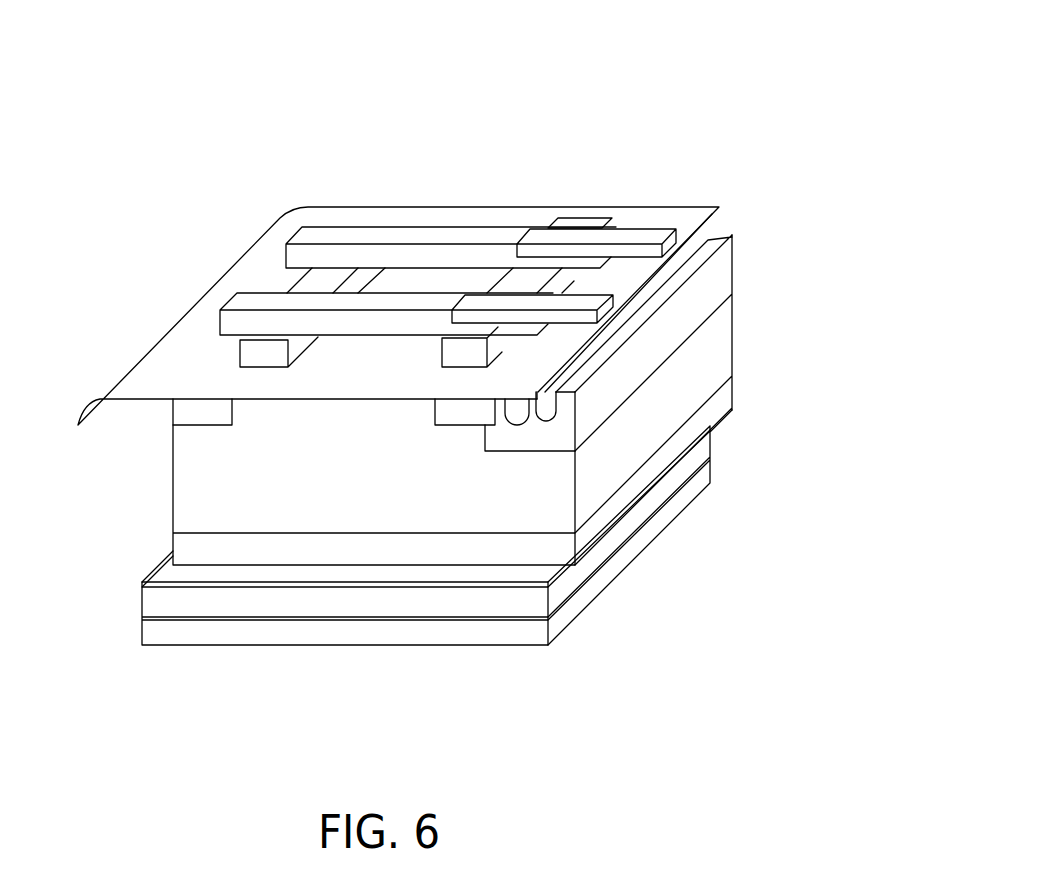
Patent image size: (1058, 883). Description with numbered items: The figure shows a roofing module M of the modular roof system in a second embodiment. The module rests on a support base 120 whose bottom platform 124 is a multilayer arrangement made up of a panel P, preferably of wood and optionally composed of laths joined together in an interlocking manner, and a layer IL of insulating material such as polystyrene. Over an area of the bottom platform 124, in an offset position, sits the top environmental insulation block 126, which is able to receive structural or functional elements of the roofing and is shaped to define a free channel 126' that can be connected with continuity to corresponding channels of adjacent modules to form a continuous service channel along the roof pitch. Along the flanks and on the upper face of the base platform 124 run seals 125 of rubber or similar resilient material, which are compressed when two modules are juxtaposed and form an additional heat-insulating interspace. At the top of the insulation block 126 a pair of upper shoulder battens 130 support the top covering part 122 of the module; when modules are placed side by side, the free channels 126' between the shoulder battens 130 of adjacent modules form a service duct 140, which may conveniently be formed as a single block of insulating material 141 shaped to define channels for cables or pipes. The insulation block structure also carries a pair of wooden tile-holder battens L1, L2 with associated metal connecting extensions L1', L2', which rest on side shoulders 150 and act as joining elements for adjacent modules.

The module M is at (243, 100).
The support base 120 is at (740, 543).
The top covering part 122 is at (597, 200).
The bottom platform 124 is at (617, 577).
The seals 125 is at (142, 582).
The top environmental insulation block 126 is at (800, 330).
The free channel 126' is at (500, 459).
The upper shoulder battens 130 is at (458, 418).
The service duct 140 is at (742, 237).
The single block of insulating material 141 is at (632, 382).
The side shoulders 150 is at (238, 353).
The wooden tile-holder batten L1 is at (451, 214).
The metal connecting extension L1' is at (621, 206).
The wooden tile-holder batten L2 is at (375, 256).
The metal connecting extension L2' is at (631, 301).
The layer of insulating material IL is at (705, 450).
The panel P is at (568, 610).